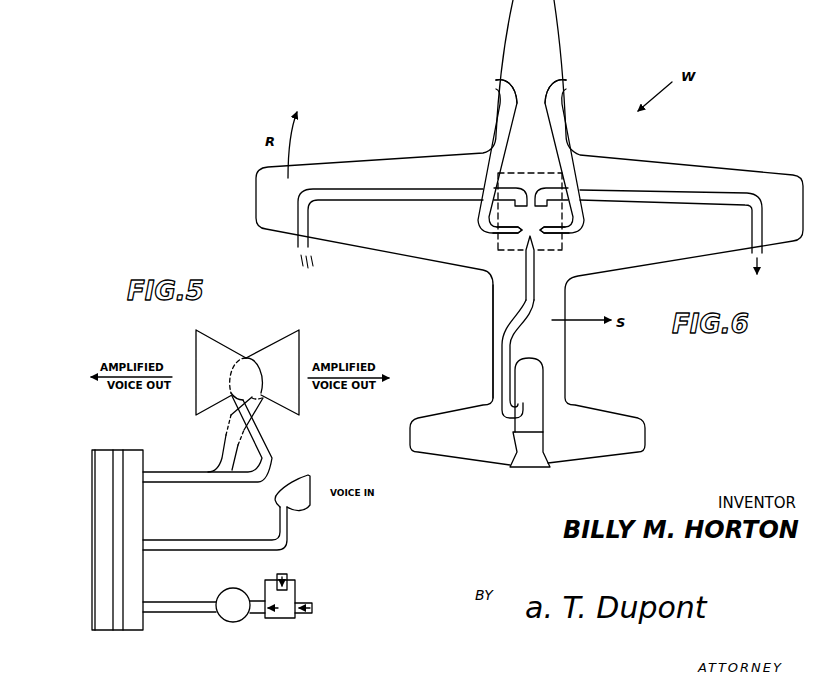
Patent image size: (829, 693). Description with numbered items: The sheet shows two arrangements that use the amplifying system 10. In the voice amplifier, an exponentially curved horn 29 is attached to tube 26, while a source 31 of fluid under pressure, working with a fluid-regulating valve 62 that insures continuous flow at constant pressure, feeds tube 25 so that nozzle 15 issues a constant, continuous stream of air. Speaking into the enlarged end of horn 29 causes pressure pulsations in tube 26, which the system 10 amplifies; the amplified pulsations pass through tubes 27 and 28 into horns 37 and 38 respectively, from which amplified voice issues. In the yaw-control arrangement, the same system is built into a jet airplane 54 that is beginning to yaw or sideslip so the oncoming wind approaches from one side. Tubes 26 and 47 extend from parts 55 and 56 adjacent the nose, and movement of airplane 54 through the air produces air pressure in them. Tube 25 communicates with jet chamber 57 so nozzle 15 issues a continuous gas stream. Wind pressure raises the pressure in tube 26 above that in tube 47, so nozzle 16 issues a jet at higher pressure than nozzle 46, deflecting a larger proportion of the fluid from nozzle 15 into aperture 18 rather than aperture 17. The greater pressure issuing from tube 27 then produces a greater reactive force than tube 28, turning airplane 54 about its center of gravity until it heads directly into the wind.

In FIG. 6, the system 10 is at (529, 233).
In FIG. 5, the system 10 is at (104, 444).
In FIG. 6, the nozzle 15 is at (532, 248).
In FIG. 6, the nozzle 16 is at (555, 233).
In FIG. 6, the aperture 17 is at (545, 188).
In FIG. 6, the aperture 18 is at (510, 188).
In FIG. 6, the tube 25 is at (508, 363).
In FIG. 5, the tube 25 is at (173, 606).
In FIG. 6, the tube 26 is at (553, 105).
In FIG. 5, the tube 26 is at (168, 551).
In FIG. 6, the tube 27 is at (384, 197).
In FIG. 5, the tube 27 is at (168, 483).
In FIG. 6, the tube 28 is at (677, 198).
In FIG. 5, the exponentially curved horn 29 is at (307, 511).
In FIG. 5, the source of fluid under pressure 31 is at (297, 597).
In FIG. 5, the horn 37 is at (196, 410).
In FIG. 5, the horn 38 is at (299, 406).
In FIG. 6, the nozzle 46 is at (505, 233).
In FIG. 6, the tube 47 is at (510, 103).
In FIG. 6, the jet airplane 54 is at (508, 301).
In FIG. 6, the part 55 is at (567, 83).
In FIG. 6, the part 56 is at (496, 84).
In FIG. 6, the jet chamber 57 is at (538, 382).
In FIG. 5, the fluid-regulating valve 62 is at (231, 588).